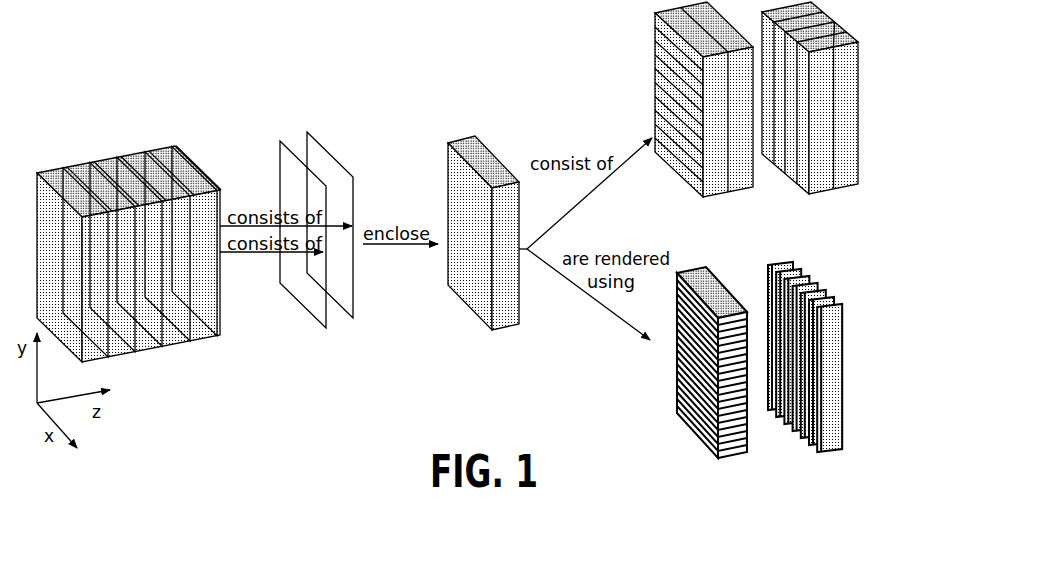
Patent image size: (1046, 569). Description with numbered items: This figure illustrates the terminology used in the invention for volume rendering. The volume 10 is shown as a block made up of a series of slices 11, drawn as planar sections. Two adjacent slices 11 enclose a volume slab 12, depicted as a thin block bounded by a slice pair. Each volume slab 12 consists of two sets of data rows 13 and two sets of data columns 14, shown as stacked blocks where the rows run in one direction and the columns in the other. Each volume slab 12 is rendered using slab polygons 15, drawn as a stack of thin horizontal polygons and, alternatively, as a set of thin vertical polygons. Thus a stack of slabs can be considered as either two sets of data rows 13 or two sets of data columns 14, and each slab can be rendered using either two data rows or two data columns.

The volume 10 is at (136, 150).
The slices 11 is at (296, 135).
The volume slab 12 is at (460, 132).
The data rows 13 is at (653, 83).
The data columns 14 is at (863, 90).
The slab polygons 15 is at (680, 423).